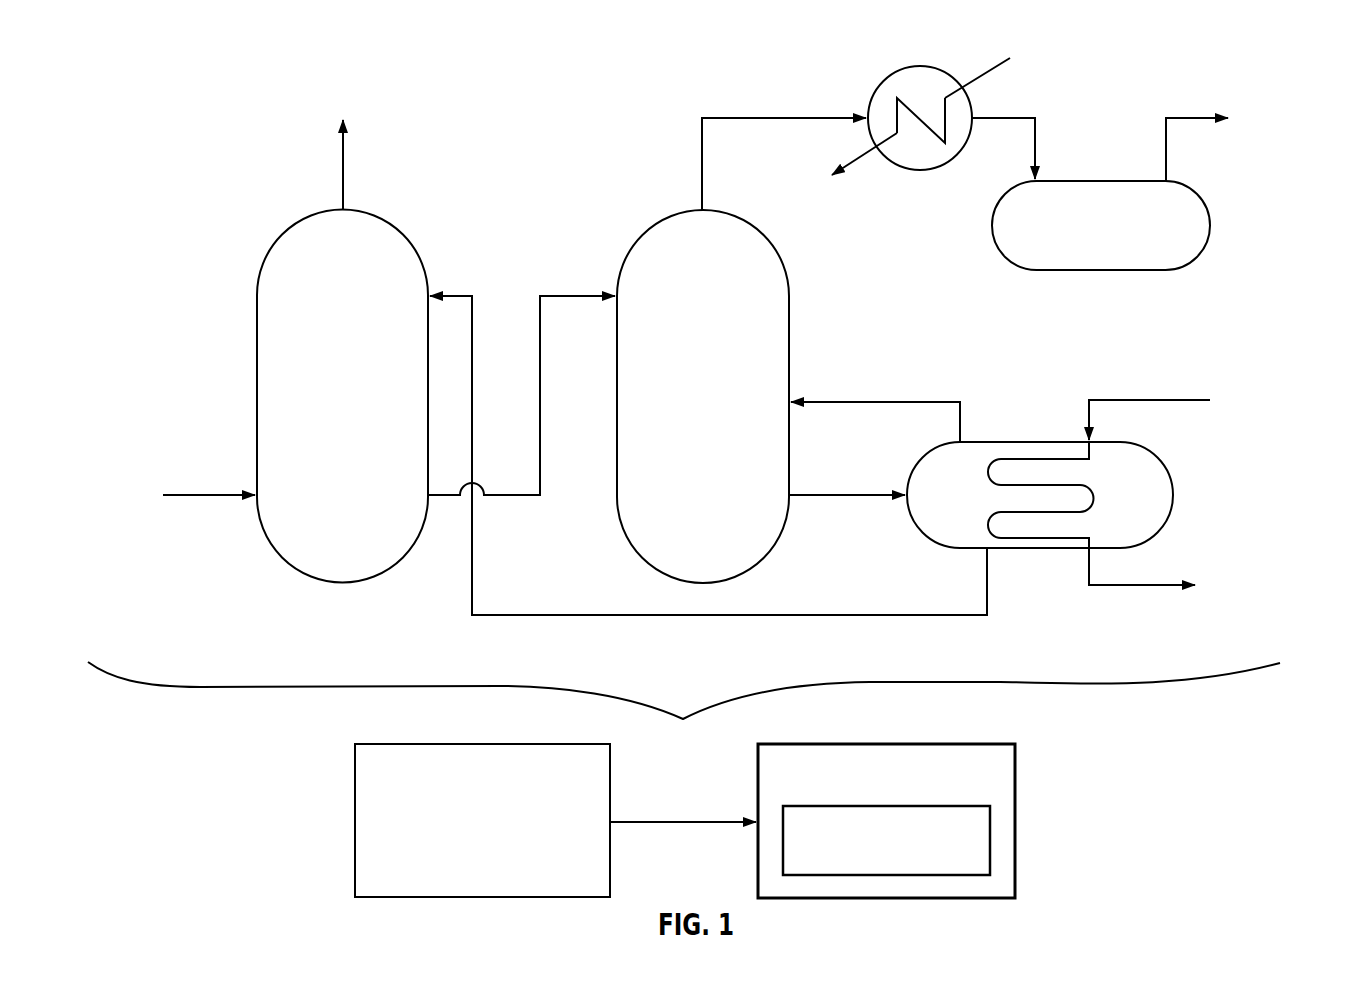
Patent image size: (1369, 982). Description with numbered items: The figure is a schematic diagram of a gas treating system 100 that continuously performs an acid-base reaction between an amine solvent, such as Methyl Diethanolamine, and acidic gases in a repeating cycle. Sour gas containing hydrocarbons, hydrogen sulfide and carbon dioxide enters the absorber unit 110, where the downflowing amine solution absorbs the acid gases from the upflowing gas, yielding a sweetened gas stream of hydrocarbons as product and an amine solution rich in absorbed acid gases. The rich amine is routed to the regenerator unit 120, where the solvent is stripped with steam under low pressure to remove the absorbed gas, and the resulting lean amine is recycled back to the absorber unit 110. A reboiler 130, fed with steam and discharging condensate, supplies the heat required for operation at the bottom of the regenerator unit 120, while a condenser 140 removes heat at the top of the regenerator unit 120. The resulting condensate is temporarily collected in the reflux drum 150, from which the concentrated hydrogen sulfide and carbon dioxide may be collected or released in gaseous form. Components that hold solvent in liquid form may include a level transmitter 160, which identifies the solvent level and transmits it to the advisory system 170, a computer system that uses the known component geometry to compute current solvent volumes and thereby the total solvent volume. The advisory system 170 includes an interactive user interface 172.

The gas treating system 100 is at (240, 155).
The absorber unit 110 is at (257, 306).
The regenerator unit 120 is at (790, 307).
The reboiler 130 is at (1152, 449).
The condenser 140 is at (879, 86).
The reflux drum 150 is at (1083, 181).
The level transmitter 160 is at (354, 822).
The advisory system 170 is at (1017, 790).
The interactive user interface 172 is at (993, 845).